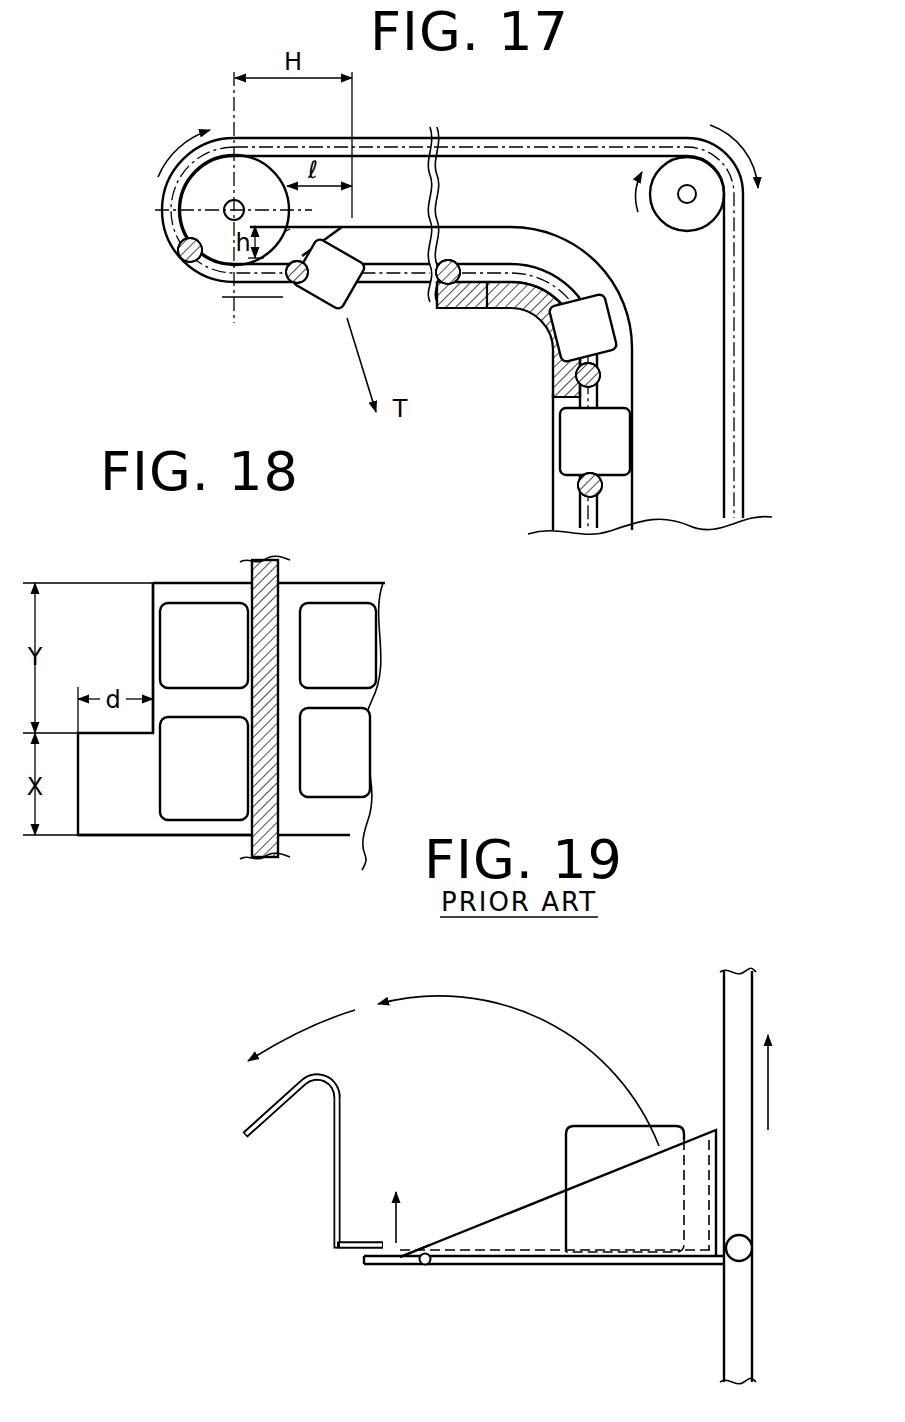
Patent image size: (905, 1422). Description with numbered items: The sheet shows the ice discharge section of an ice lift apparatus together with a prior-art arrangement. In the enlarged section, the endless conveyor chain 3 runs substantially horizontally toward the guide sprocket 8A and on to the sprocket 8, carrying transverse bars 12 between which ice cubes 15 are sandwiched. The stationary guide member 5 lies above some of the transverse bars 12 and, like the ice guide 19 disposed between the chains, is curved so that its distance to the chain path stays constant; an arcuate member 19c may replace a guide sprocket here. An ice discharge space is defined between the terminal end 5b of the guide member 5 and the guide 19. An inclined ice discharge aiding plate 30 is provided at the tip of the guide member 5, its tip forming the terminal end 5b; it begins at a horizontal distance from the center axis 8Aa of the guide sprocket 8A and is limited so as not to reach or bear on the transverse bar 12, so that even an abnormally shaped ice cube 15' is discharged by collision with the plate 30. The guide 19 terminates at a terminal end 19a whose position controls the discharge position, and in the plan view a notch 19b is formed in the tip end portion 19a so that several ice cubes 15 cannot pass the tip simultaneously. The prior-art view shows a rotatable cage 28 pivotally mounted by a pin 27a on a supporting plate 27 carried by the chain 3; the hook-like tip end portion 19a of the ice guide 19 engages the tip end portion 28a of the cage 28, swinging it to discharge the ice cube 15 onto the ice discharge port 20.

In FIG. 17, the endless conveyor chain 3 is at (580, 518).
In FIG. 19, the endless conveyor chain 3 is at (736, 1014).
In FIG. 17, the stationary guide member 5 is at (570, 247).
In FIG. 17, the terminal end of the guide member 5b is at (282, 255).
In FIG. 17, the sprocket 8 is at (693, 163).
In FIG. 17, the guide sprocket 8A is at (226, 170).
In FIG. 17, the center axis of the guide sprocket 8Aa is at (240, 200).
In FIG. 17, the transverse bar 12 is at (180, 260).
In FIG. 18, the transverse bar 12 is at (268, 583).
In FIG. 17, the ice cube 15 is at (620, 384).
In FIG. 18, the ice cube 15 is at (269, 713).
In FIG. 19, the ice cube 15 is at (466, 1124).
In FIG. 17, the ice cube of abnormal shape 15' is at (329, 302).
In FIG. 17, the ice guide 19 is at (532, 330).
In FIG. 18, the ice guide 19 is at (205, 588).
In FIG. 19, the ice guide 19 is at (333, 1182).
In FIG. 17, the terminal end of the guide 19a is at (443, 313).
In FIG. 18, the terminal end of the guide 19a is at (122, 813).
In FIG. 19, the terminal end of the guide 19a is at (360, 1251).
In FIG. 18, the notch 19b is at (107, 632).
In FIG. 17, the arcuate member 19c is at (488, 318).
In FIG. 19, the ice discharge port 20 is at (277, 1119).
In FIG. 19, the supporting plate 27 is at (631, 1265).
In FIG. 19, the pin 27a is at (427, 1268).
In FIG. 19, the rotatable cage 28 is at (523, 1231).
In FIG. 19, the tip end portion of the rotatable cage 28a is at (382, 1265).
In FIG. 17, the ice discharge aiding plate 30 is at (288, 230).